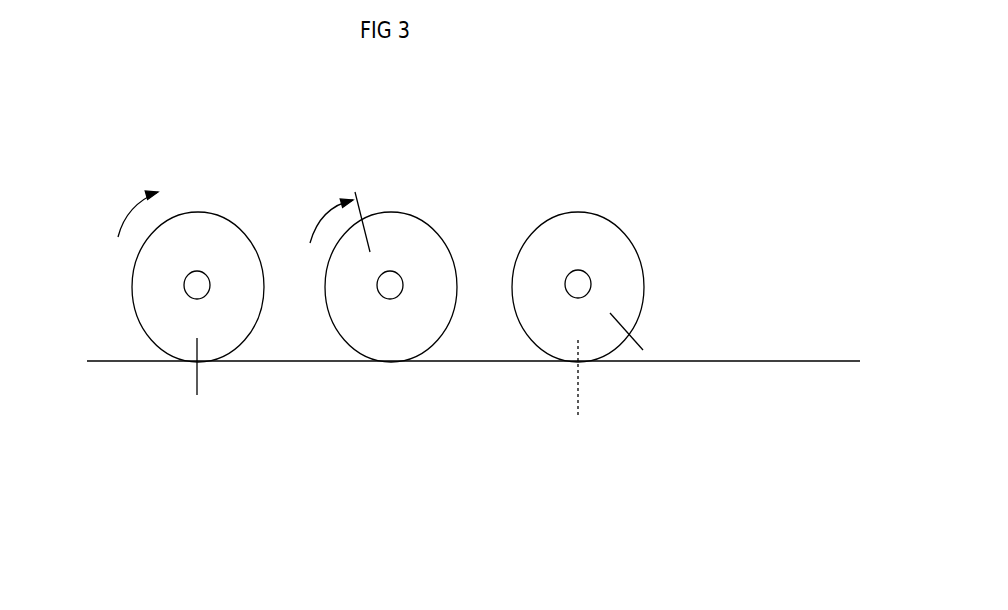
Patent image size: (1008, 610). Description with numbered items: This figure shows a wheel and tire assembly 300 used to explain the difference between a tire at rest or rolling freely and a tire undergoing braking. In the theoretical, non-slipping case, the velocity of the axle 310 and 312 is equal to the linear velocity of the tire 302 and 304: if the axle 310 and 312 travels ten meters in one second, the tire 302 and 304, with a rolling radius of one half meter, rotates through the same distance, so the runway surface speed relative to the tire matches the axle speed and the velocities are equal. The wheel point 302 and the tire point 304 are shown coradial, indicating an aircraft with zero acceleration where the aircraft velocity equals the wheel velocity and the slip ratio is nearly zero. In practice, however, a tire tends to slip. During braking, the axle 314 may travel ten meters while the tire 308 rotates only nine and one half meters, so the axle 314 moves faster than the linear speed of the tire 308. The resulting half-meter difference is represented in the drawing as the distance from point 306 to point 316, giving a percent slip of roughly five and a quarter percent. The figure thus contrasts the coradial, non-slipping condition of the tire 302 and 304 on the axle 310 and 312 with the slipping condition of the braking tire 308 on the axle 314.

The wheel and tire assembly 300 is at (175, 133).
The tire 302 is at (195, 367).
The tire 304 is at (358, 235).
The point 306 is at (622, 345).
The tire 308 is at (538, 357).
The axle 310 is at (208, 269).
The axle 312 is at (402, 267).
The axle 314 is at (580, 263).
The point 316 is at (583, 367).